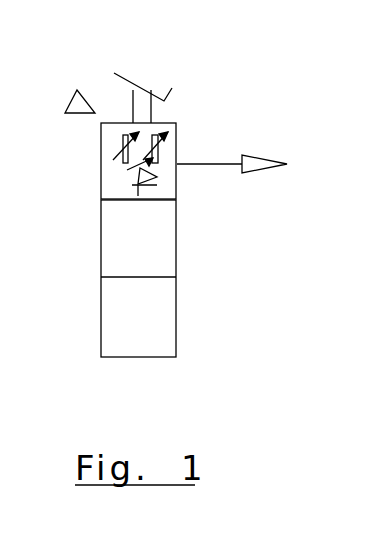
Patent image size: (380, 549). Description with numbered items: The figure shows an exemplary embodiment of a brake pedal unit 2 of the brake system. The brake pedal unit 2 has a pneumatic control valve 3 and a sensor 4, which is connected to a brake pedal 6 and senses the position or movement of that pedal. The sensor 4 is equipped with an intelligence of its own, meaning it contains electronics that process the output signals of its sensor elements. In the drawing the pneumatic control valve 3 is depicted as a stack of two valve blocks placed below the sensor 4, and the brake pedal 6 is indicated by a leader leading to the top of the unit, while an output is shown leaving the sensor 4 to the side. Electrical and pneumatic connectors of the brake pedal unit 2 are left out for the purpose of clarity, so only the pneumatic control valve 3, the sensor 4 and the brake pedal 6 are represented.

The brake pedal unit 2 is at (65, 105).
The pneumatic control valve 3 is at (101, 277).
The sensor 4 is at (108, 186).
The brake pedal 6 is at (151, 100).